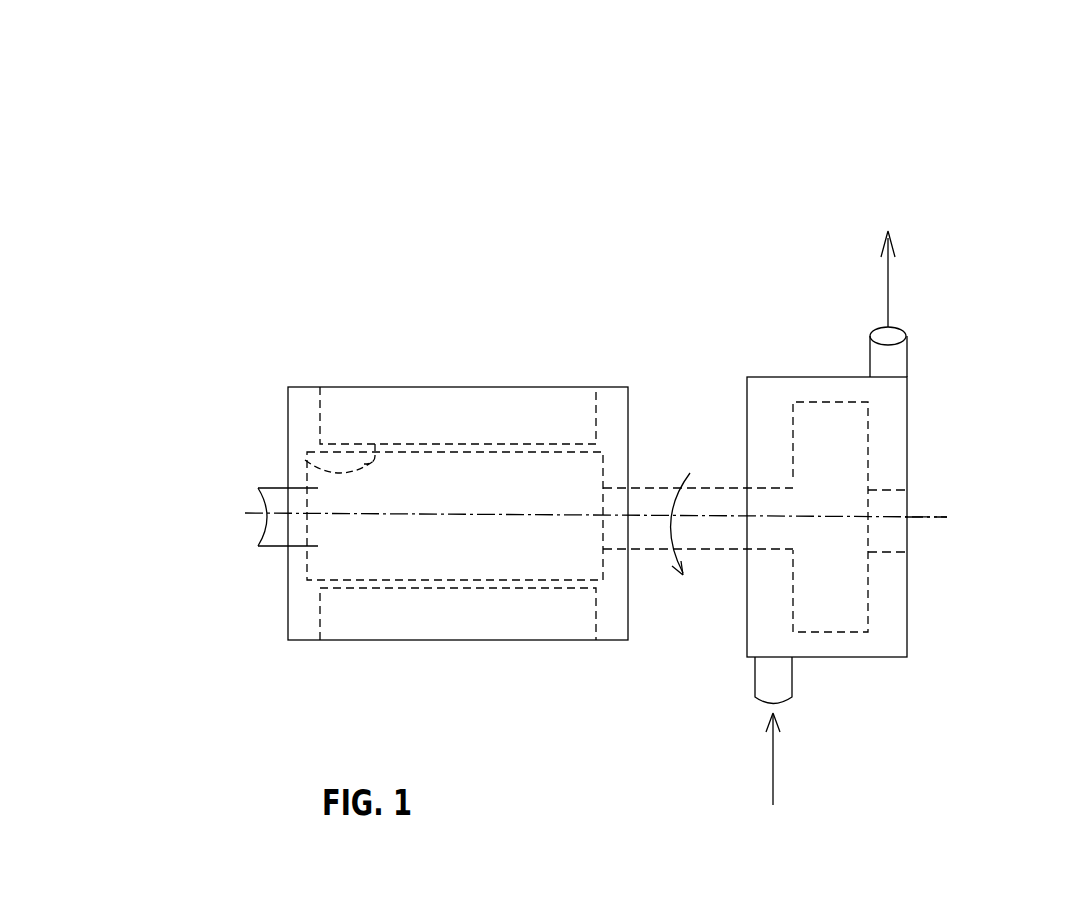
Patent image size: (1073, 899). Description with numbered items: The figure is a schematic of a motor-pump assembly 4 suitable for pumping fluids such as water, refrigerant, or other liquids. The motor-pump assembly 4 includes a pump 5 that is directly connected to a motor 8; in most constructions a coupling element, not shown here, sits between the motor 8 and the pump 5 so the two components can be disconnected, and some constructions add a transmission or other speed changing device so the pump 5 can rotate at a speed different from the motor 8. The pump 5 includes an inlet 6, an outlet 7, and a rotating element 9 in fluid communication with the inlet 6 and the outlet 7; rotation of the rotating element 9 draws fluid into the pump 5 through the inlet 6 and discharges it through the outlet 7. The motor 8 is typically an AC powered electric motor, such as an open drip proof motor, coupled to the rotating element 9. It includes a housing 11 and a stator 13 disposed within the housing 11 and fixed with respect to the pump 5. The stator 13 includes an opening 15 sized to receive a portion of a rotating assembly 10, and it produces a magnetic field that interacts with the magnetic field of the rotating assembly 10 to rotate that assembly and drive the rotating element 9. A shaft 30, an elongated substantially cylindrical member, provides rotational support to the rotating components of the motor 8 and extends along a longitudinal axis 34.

The motor-pump assembly 4 is at (911, 91).
The pump 5 is at (948, 391).
The inlet 6 is at (755, 677).
The outlet 7 is at (880, 357).
The motor 8 is at (450, 342).
The rotating element 9 is at (855, 616).
The rotating assembly 10 is at (323, 553).
The housing 11 is at (288, 624).
The stator 13 is at (515, 412).
The opening 15 is at (335, 473).
The shaft 30 is at (263, 522).
The longitudinal axis 34 is at (932, 518).